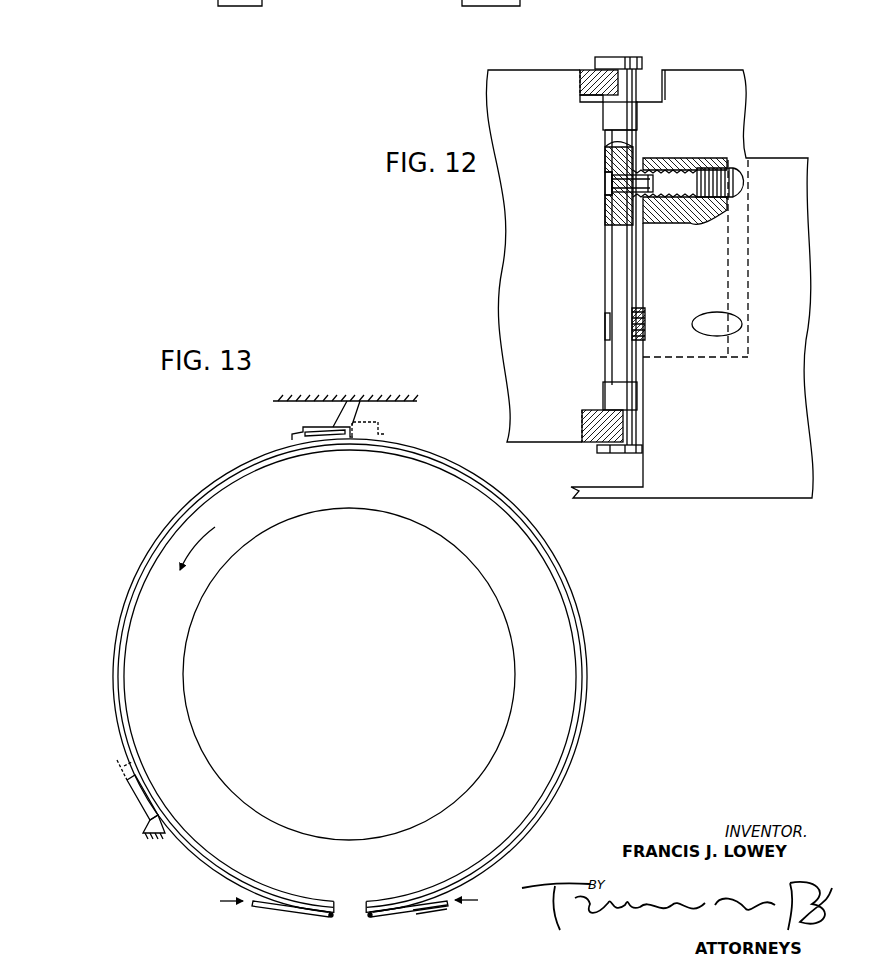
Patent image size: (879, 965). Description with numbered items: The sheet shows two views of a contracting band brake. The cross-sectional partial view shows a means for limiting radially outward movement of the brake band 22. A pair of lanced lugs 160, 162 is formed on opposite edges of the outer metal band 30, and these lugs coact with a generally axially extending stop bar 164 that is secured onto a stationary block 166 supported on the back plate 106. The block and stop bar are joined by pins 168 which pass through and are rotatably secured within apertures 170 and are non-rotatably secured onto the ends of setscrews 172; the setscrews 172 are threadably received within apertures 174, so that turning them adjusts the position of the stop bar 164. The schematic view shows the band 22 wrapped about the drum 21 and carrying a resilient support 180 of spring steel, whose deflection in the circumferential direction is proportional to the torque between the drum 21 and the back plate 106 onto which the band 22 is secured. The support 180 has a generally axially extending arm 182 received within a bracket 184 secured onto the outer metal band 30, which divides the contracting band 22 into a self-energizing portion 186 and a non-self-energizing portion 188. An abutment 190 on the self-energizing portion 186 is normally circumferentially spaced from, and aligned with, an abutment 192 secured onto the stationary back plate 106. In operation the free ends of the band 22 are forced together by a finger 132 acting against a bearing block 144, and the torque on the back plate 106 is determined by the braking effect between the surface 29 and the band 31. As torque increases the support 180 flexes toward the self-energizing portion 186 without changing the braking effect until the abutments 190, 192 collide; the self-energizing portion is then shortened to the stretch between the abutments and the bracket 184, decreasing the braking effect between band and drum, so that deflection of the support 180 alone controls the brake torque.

In FIG. 13, the drum 21 is at (543, 591).
In FIG. 13, the brake band 22 is at (540, 533).
In FIG. 13, the surface 29 is at (356, 904).
In FIG. 12, the outer metal band 30 is at (722, 70).
In FIG. 13, the outer metal band 30 is at (585, 690).
In FIG. 13, the band 31 is at (588, 648).
In FIG. 12, the back plate 106 is at (810, 428).
In FIG. 13, the back plate 106 is at (395, 402).
In FIG. 13, the finger 132 is at (268, 908).
In FIG. 13, the bearing block 144 is at (318, 914).
In FIG. 12, the lanced lug 160 is at (609, 78).
In FIG. 12, the lanced lug 162 is at (607, 441).
In FIG. 12, the stop bar 164 is at (637, 116).
In FIG. 12, the stationary block 166 is at (683, 158).
In FIG. 12, the pin 168 is at (605, 183).
In FIG. 12, the aperture 170 is at (620, 192).
In FIG. 12, the setscrew 172 is at (655, 160).
In FIG. 12, the aperture 174 is at (720, 171).
In FIG. 13, the resilient support 180 is at (342, 410).
In FIG. 13, the arm 182 is at (332, 431).
In FIG. 13, the bracket 184 is at (367, 421).
In FIG. 13, the self-energizing portion 186 is at (160, 527).
In FIG. 13, the non-self-energizing portion 188 is at (578, 745).
In FIG. 13, the abutment 190 is at (131, 796).
In FIG. 13, the abutment 192 is at (142, 835).